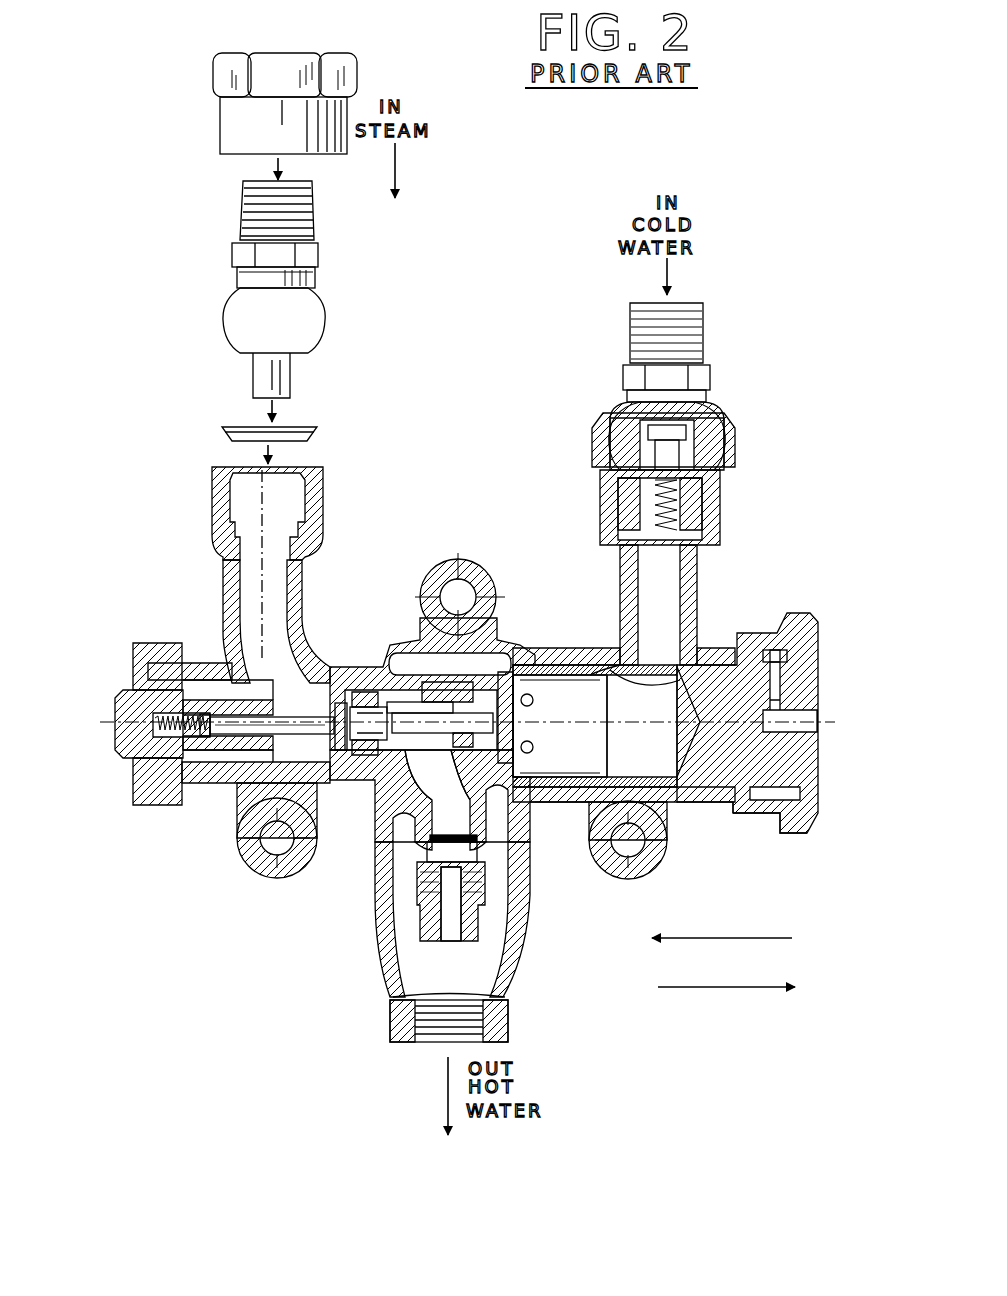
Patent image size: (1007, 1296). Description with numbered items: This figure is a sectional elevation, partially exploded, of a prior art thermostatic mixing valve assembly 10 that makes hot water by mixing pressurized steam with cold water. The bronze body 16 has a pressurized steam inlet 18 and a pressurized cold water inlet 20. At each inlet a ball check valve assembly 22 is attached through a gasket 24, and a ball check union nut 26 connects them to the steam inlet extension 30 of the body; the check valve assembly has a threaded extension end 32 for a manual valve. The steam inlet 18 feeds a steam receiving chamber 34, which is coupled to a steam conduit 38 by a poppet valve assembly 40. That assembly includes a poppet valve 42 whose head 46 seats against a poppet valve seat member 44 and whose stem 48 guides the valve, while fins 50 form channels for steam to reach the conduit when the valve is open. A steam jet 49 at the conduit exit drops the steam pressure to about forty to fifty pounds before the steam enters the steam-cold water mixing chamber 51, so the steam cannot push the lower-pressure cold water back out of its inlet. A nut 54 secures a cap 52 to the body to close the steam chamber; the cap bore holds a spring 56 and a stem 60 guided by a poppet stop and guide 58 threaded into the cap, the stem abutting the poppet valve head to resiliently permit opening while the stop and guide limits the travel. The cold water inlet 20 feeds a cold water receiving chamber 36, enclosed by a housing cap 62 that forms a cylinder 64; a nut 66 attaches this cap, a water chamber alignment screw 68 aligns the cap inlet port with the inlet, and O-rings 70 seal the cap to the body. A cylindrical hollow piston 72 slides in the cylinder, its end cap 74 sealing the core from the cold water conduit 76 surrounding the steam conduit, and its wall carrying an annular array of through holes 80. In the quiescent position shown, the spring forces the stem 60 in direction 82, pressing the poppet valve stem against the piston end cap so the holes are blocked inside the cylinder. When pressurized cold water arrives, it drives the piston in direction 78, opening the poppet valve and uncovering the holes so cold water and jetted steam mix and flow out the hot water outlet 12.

The mixing valve assembly 10 is at (530, 330).
The hot water outlet 12 is at (450, 1043).
The body 16 is at (388, 988).
The steam inlet 18 is at (255, 572).
The cold water inlet 20 is at (662, 568).
The ball check valve assembly 22 is at (224, 318).
The gasket 24 is at (228, 434).
The ball check union nut 26 is at (220, 125).
The steam inlet extension 30 is at (210, 493).
The threaded extension end 32 is at (312, 200).
The steam receiving chamber 34 is at (320, 693).
The cold water receiving chamber 36 is at (602, 700).
The steam conduit 38 is at (533, 750).
The poppet valve assembly 40 is at (421, 716).
The poppet valve 42 is at (315, 790).
The poppet valve seat member 44 is at (352, 695).
The head 46 is at (348, 752).
The stem 48 is at (442, 694).
The steam jet 49 is at (475, 925).
The fins 50 is at (372, 735).
The steam-cold water mixing chamber 51 is at (440, 968).
The cap 52 is at (130, 690).
The nut 54 is at (148, 647).
The spring 56 is at (172, 738).
The poppet stop and guide 58 is at (265, 795).
The stem 60 is at (270, 728).
The housing cap 62 is at (690, 802).
The cylinder 64 is at (560, 726).
The nut 66 is at (800, 835).
The water chamber alignment screw 68 is at (770, 650).
The O-rings 70 is at (745, 812).
The piston 72 is at (558, 797).
The end cap 74 is at (520, 660).
The cold water conduit 76 is at (540, 805).
The direction 78 is at (688, 938).
The through holes 80 is at (533, 694).
The direction 82 is at (756, 987).